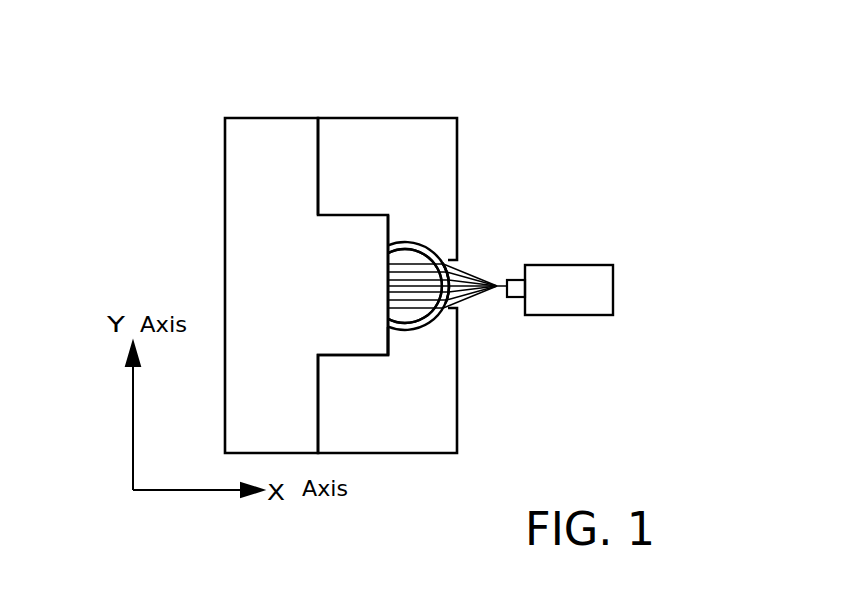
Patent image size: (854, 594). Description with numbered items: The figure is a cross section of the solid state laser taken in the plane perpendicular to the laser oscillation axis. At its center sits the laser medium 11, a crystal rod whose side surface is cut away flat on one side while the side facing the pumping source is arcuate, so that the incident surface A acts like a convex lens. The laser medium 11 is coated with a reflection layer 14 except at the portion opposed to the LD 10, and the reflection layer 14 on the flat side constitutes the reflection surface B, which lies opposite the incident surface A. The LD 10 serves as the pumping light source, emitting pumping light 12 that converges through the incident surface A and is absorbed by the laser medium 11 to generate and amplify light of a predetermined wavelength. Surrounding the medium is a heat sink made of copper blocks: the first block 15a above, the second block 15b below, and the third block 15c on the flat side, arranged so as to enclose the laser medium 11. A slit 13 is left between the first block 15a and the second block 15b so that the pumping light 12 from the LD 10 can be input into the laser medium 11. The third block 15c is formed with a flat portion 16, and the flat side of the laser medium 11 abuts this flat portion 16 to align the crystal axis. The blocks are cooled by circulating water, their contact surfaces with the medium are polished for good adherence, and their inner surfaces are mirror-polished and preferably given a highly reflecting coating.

The LD 10 is at (613, 293).
The laser medium 11 is at (395, 243).
The pumping light 12 is at (497, 283).
The slit 13 is at (462, 270).
The reflection layer 14 is at (417, 330).
The first block 15a is at (447, 155).
The second block 15b is at (388, 438).
The third block 15c is at (272, 132).
The flat portion 16 is at (388, 297).
The incident surface A is at (449, 300).
The reflection surface B is at (432, 263).